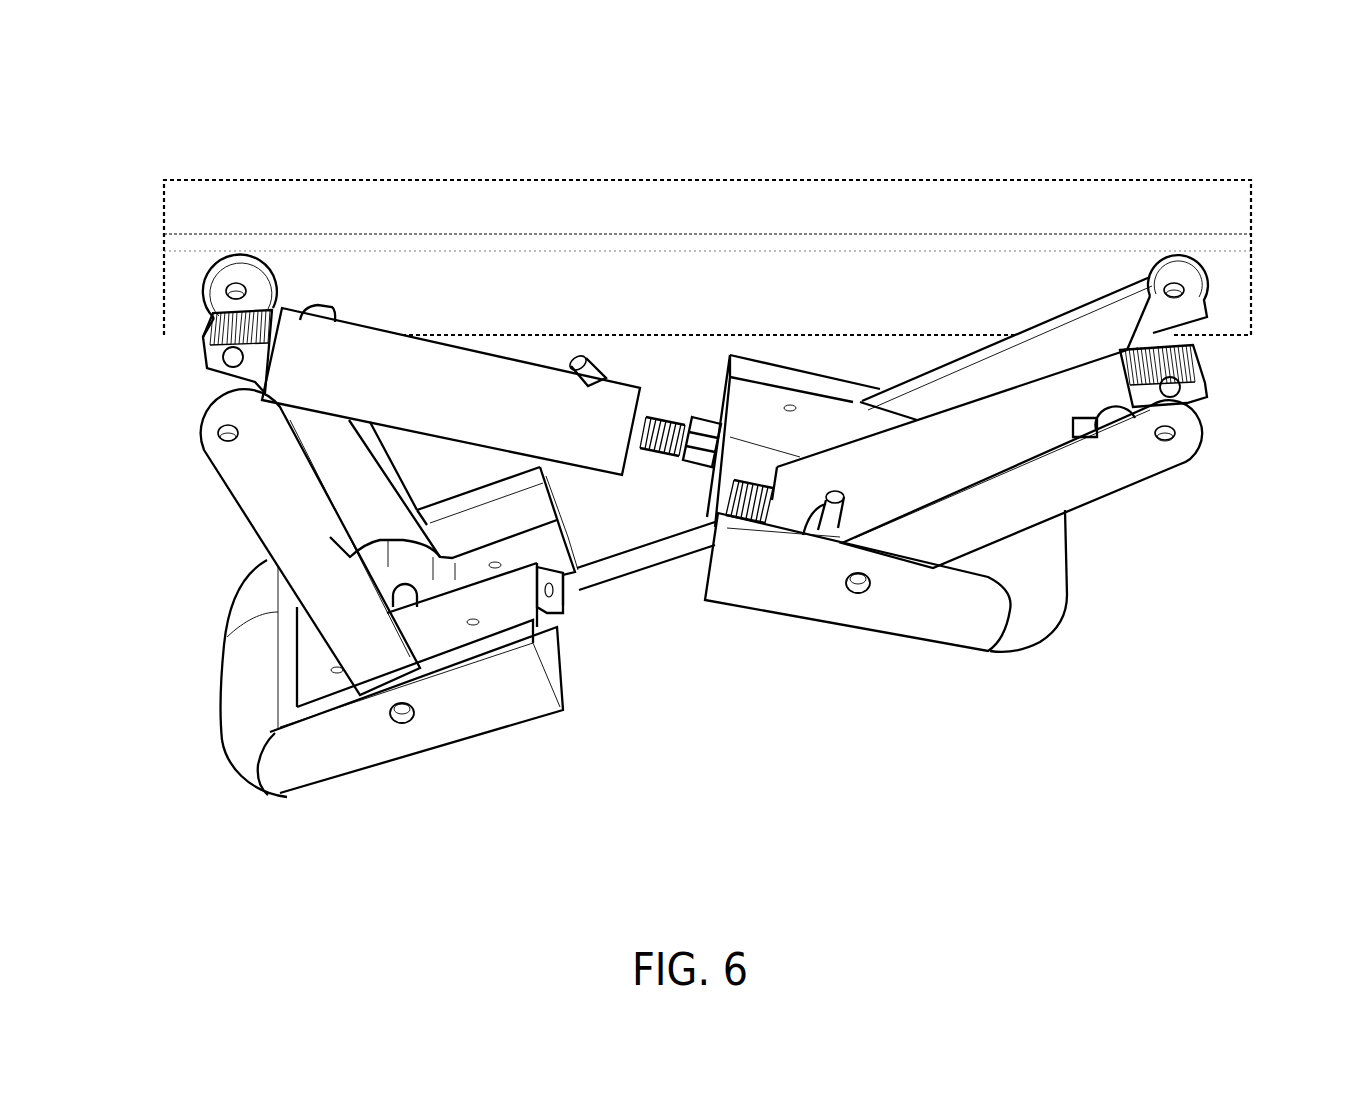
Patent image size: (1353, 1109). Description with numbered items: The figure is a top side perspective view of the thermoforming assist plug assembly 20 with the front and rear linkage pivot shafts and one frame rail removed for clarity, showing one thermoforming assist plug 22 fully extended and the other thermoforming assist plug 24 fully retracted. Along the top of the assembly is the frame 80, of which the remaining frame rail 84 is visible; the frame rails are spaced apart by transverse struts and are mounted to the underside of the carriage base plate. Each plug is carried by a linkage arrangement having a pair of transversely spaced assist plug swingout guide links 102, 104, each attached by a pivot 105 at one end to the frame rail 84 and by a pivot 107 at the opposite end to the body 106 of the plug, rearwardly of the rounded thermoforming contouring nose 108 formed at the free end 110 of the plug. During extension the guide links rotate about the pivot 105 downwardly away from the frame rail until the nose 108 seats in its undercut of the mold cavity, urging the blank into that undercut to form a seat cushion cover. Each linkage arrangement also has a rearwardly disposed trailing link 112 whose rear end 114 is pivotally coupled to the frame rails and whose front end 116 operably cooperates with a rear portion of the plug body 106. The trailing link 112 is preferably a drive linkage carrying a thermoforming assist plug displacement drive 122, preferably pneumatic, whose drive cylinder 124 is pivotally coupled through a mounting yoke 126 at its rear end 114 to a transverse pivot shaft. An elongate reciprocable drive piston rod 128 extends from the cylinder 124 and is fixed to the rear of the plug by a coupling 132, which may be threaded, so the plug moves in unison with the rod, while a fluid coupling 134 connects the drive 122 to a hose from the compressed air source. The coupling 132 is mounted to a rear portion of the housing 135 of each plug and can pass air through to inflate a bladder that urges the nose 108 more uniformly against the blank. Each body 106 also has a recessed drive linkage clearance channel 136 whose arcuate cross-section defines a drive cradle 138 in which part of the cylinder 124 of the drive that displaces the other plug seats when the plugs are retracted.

The thermoforming assist plug assembly 20 is at (1045, 720).
The thermoforming assist plug 22 is at (1042, 655).
The thermoforming assist plug 24 is at (253, 807).
The frame 80 is at (1252, 178).
The frame rail 84 is at (193, 210).
The assist plug swingout guide link 102 is at (248, 465).
The assist plug swingout guide link 104 is at (212, 280).
The pivot 105 is at (238, 285).
The body 106 is at (472, 700).
The pivot 107 is at (407, 717).
The rounded thermoforming contouring nose 108 is at (217, 730).
The free end 110 is at (237, 773).
The trailing link 112 is at (197, 338).
The rear end 114 is at (213, 360).
The front end 116 is at (713, 428).
The thermoforming assist plug displacement drive 122 is at (404, 308).
The drive cylinder 124 is at (472, 365).
The mounting yoke 126 is at (207, 318).
The drive piston rod 128 is at (650, 567).
The coupling 132 is at (706, 428).
The fluid coupling 134 is at (321, 312).
The housing 135 is at (848, 418).
The drive linkage clearance channel 136 is at (472, 510).
The drive cradle 138 is at (510, 502).